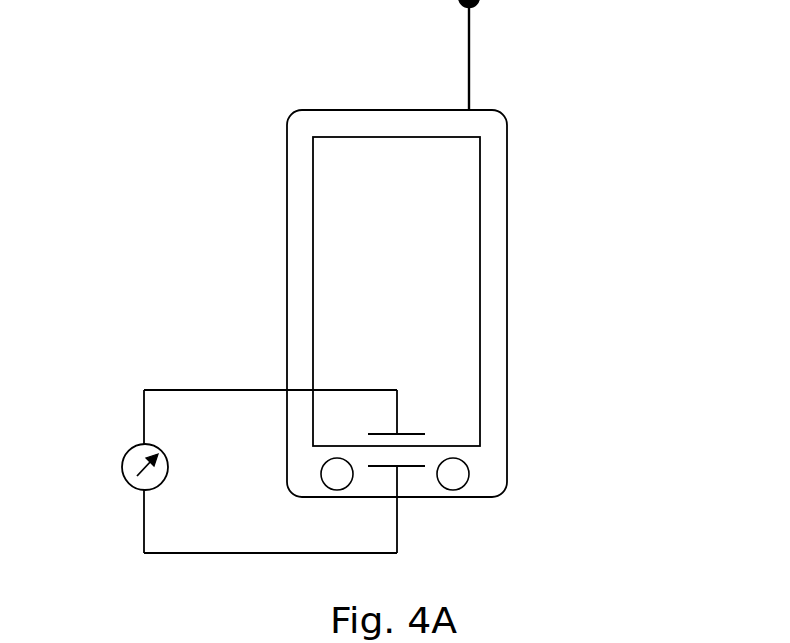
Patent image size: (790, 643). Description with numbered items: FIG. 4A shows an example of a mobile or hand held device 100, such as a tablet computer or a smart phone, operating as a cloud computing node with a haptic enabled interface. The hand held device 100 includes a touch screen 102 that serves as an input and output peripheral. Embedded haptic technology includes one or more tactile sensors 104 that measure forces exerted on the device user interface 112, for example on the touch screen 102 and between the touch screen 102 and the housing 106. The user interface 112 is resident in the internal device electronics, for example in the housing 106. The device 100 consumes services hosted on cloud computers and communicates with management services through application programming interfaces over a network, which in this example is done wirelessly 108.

The hand held device 100 is at (596, 447).
The touch screen 102 is at (480, 286).
The tactile sensor 104 is at (122, 467).
The housing 106 is at (287, 210).
The wireless communication 108 is at (470, 83).
The user interface 112 is at (420, 444).